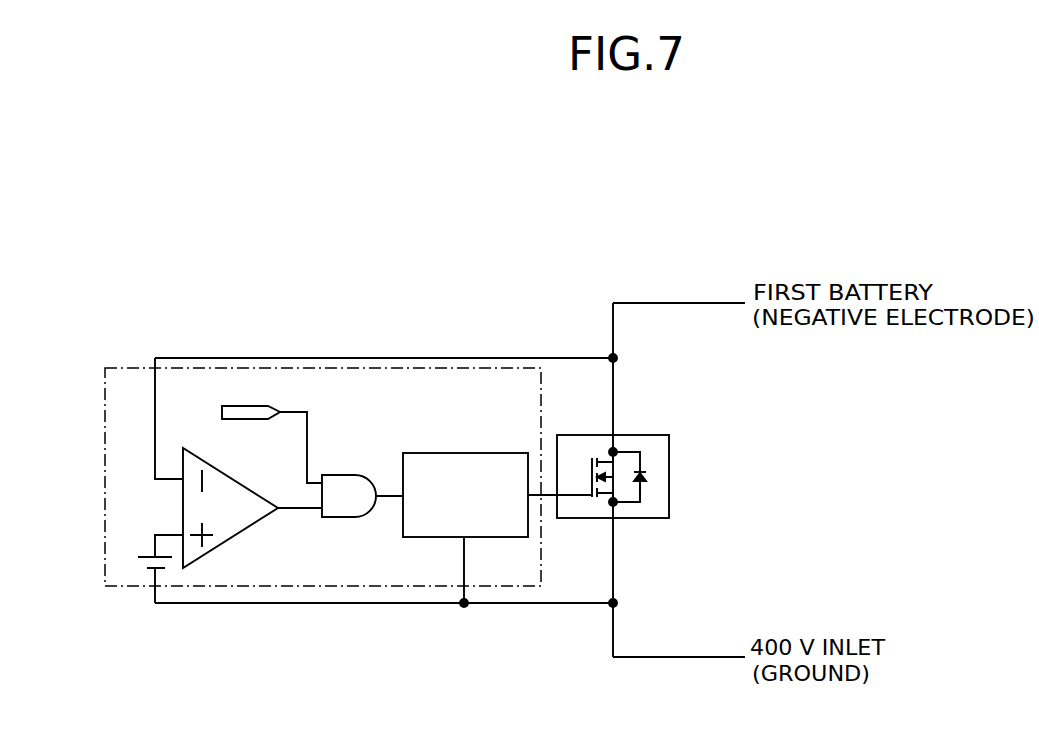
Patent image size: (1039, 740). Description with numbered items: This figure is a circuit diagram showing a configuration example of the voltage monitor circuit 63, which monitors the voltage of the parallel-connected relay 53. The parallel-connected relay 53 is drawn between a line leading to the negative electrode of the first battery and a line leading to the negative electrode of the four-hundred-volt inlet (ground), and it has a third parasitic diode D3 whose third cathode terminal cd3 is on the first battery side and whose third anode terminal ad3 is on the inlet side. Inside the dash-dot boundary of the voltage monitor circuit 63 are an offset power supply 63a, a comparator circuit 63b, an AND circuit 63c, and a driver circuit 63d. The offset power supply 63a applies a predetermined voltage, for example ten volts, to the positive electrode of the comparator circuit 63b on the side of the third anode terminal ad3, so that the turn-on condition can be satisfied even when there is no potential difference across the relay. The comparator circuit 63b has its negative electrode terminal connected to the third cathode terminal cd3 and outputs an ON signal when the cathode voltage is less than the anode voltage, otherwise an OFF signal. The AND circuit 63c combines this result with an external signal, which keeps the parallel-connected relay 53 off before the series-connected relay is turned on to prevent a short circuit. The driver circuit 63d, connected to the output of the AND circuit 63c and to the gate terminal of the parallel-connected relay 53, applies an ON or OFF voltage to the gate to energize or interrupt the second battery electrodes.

The voltage monitor circuit 63 is at (137, 367).
The offset power supply 63a is at (147, 555).
The comparator circuit 63b is at (236, 481).
The AND circuit 63c is at (333, 518).
The driver circuit 63d is at (475, 440).
The parallel-connected relay 53 is at (640, 420).
The third parasitic diode D3 is at (643, 477).
The third cathode terminal cd3 is at (640, 462).
The third anode terminal ad3 is at (640, 495).